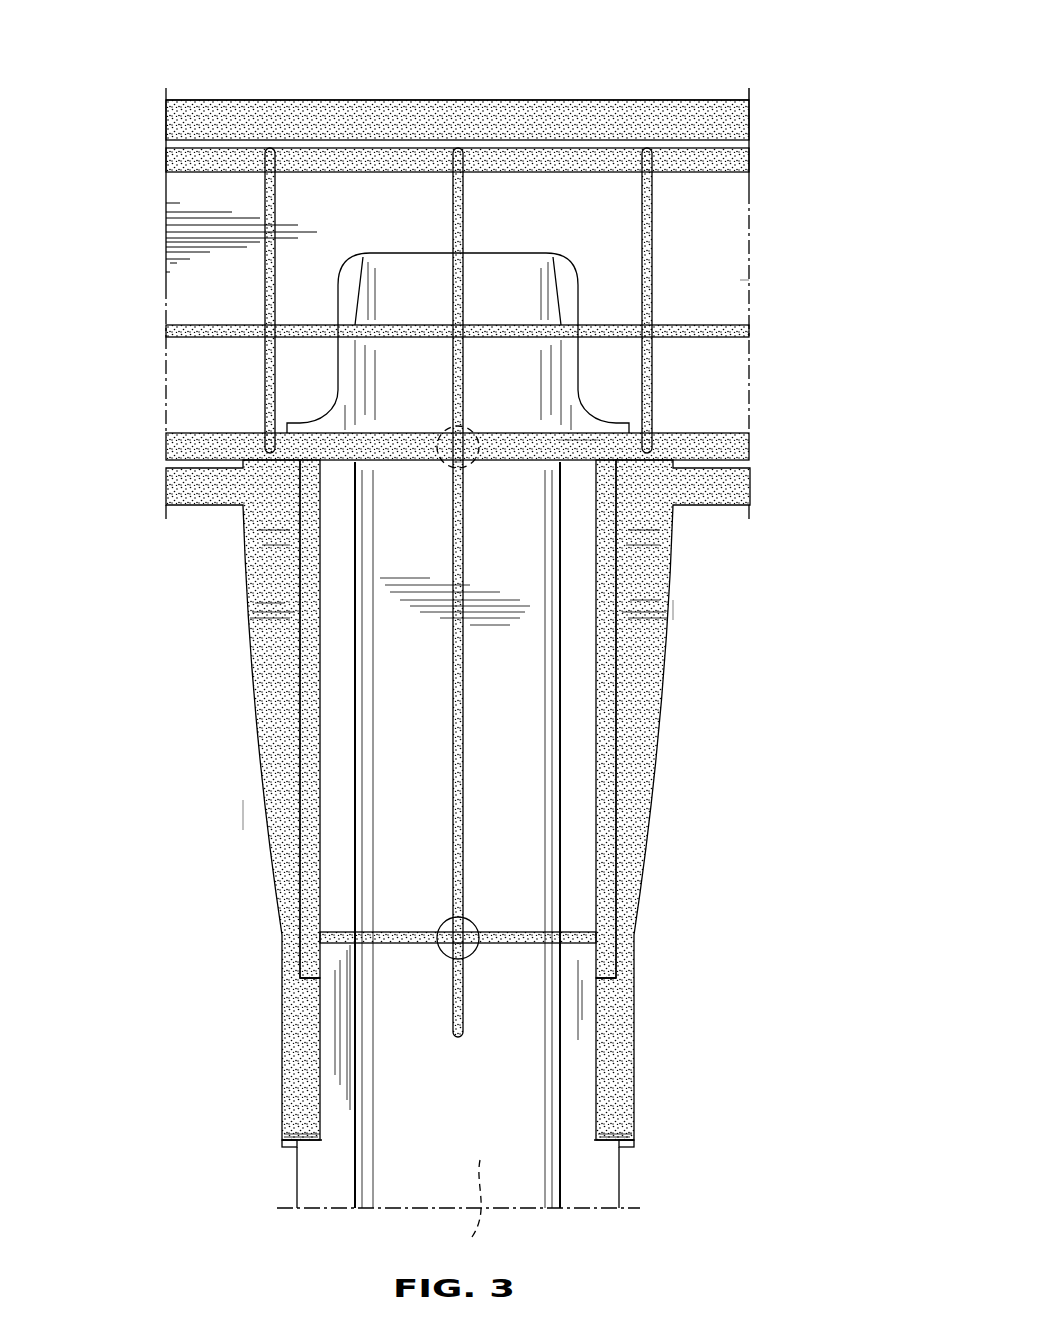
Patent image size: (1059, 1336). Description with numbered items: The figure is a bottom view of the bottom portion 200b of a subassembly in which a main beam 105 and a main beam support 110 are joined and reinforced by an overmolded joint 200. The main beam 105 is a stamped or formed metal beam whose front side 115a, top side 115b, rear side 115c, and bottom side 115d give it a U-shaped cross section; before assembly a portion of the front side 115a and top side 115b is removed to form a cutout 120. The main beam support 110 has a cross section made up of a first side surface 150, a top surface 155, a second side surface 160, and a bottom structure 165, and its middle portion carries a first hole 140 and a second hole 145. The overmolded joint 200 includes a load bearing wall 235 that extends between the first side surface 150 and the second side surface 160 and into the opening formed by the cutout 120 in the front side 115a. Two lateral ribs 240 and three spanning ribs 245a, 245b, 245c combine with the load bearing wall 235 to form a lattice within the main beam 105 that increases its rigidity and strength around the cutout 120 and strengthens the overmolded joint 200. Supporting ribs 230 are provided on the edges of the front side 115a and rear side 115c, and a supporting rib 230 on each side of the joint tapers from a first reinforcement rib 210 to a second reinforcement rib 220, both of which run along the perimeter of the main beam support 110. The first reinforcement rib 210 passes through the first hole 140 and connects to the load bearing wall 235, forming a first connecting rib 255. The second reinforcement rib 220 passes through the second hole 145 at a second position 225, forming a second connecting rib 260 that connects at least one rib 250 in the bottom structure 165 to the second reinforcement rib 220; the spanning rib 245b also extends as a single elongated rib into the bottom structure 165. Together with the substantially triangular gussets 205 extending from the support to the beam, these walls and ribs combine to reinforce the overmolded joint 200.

The main beam 105 is at (720, 247).
The main beam support 110 is at (620, 1158).
The front side 115a is at (183, 462).
The top side 115b is at (720, 300).
The rear side 115c is at (178, 141).
The bottom side 115d is at (212, 283).
The cutout 120 is at (400, 372).
The first hole 140 is at (470, 430).
The second hole 145 is at (470, 922).
The first side surface 150 is at (605, 1193).
The top surface 155 is at (453, 1206).
The second side surface 160 is at (312, 1172).
The bottom structure 165 is at (300, 1118).
The overmolded joint 200 is at (705, 603).
The bottom portion 200b is at (780, 78).
The first gusset 205 is at (342, 577).
The first reinforcement rib 210 is at (645, 490).
The second reinforcement rib 220 is at (296, 940).
The second position 225 is at (463, 1055).
The supporting rib 230 is at (727, 120).
The load bearing wall 235 is at (573, 447).
The lateral ribs 240 is at (196, 163).
The spanning rib 245a is at (268, 148).
The spanning rib 245b is at (458, 148).
The spanning rib 245c is at (647, 148).
The rib 250 is at (372, 934).
The first connecting rib 255 is at (468, 468).
The second connecting rib 260 is at (447, 922).